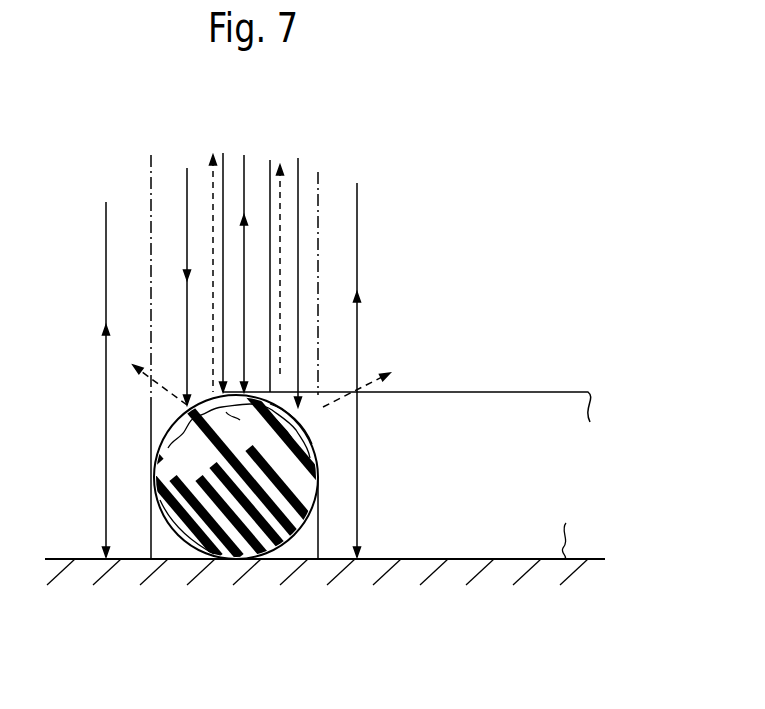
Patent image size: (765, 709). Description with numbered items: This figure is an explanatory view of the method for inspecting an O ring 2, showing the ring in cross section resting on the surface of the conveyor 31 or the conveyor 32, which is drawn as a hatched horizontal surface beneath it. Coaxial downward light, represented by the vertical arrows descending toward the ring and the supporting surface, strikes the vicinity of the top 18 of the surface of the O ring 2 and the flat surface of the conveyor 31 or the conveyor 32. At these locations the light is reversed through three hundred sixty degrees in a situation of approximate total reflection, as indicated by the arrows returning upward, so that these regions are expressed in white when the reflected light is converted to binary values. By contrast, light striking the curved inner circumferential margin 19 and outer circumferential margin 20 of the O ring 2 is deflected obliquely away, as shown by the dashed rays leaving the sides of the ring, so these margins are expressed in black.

The O ring 2 is at (304, 485).
The top of the surface of the O ring 18 is at (239, 431).
The inner circumferential margin 19 is at (291, 442).
The outer circumferential margin 20 is at (188, 498).
The conveyor 31 is at (448, 559).
The conveyor 32 is at (317, 554).